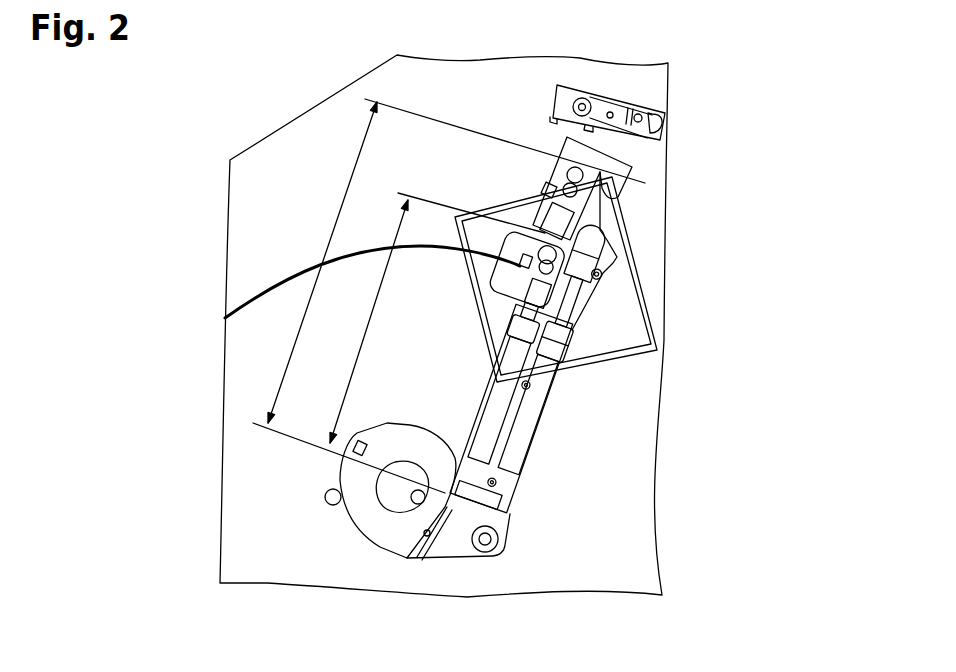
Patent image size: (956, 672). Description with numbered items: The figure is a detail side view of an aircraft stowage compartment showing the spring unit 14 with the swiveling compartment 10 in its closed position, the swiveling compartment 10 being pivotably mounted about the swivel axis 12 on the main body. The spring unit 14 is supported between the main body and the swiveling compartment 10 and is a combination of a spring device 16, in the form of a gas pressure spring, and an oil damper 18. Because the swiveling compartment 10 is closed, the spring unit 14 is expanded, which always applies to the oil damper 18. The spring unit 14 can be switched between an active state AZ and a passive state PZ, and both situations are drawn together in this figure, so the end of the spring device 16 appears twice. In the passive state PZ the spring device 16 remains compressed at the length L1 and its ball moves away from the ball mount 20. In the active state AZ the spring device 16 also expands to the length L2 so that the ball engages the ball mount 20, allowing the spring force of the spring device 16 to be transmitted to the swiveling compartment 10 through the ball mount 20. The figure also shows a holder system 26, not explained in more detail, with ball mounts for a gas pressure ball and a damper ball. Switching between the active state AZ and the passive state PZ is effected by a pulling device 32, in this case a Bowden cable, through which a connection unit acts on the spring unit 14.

The swiveling compartment 10 is at (614, 533).
The swivel axis 12 is at (425, 493).
The spring unit 14 is at (703, 302).
The spring device 16 is at (530, 418).
The oil damper 18 is at (530, 453).
The ball mount 20 is at (622, 195).
The holder system 26 is at (608, 217).
The pulling device 32 is at (282, 277).
The active state AZ is at (548, 204).
The passive state PZ is at (605, 337).
The length L1 is at (345, 402).
The length L2 is at (357, 158).